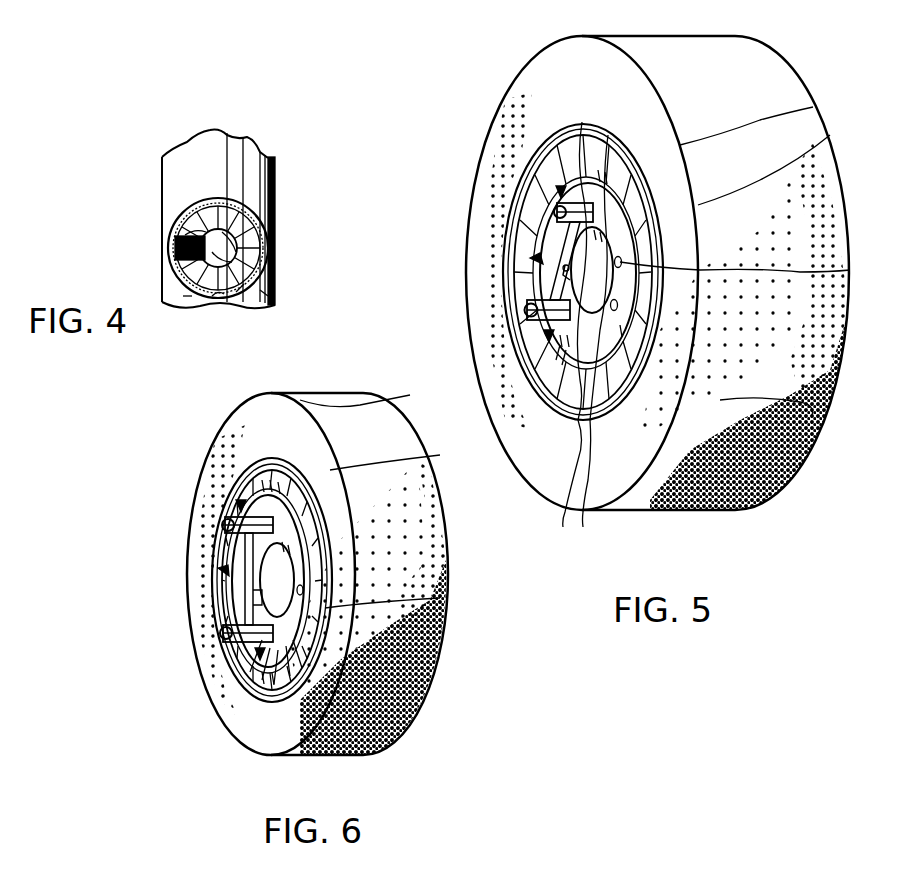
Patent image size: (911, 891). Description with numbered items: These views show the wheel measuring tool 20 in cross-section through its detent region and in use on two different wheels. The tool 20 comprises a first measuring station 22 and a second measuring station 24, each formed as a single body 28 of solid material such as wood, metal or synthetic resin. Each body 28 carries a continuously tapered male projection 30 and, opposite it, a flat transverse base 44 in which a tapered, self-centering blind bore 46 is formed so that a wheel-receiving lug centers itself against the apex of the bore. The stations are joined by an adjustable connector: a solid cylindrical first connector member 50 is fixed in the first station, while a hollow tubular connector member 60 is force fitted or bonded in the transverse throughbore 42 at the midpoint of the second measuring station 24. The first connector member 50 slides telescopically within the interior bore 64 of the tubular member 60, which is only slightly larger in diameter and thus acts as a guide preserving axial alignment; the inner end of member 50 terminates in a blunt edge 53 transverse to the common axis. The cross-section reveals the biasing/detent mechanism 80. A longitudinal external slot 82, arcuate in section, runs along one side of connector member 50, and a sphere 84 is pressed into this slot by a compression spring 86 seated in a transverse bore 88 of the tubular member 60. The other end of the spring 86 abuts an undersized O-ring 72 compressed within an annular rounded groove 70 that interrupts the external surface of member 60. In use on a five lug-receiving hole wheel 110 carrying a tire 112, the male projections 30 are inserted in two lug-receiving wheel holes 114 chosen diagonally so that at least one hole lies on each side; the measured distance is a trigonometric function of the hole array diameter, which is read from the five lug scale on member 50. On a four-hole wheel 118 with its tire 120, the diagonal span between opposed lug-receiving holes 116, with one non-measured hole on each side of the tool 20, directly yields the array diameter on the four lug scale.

In FIG. 5, the tool 20 is at (548, 258).
In FIG. 6, the tool 20 is at (238, 575).
In FIG. 5, the first measuring station 22 is at (500, 110).
In FIG. 6, the first measuring station 22 is at (212, 440).
In FIG. 4, the second measuring station 24 is at (222, 112).
In FIG. 5, the second measuring station 24 is at (560, 360).
In FIG. 6, the second measuring station 24 is at (265, 700).
In FIG. 4, the body 28 is at (186, 140).
In FIG. 5, the body 28 is at (582, 122).
In FIG. 6, the body 28 is at (258, 398).
In FIG. 5, the male projection 30 is at (608, 135).
In FIG. 6, the male projection 30 is at (300, 475).
In FIG. 4, the throughbore 42 is at (188, 303).
In FIG. 5, the base 44 is at (558, 208).
In FIG. 6, the base 44 is at (230, 518).
In FIG. 5, the blind bore 46 is at (548, 195).
In FIG. 6, the blind bore 46 is at (228, 526).
In FIG. 4, the first connector member 50 is at (268, 264).
In FIG. 5, the first connector member 50 is at (535, 245).
In FIG. 6, the first connector member 50 is at (226, 560).
In FIG. 4, the blunt edge 53 is at (264, 300).
In FIG. 4, the hollow tubular connector member 60 is at (242, 302).
In FIG. 5, the hollow tubular connector member 60 is at (553, 275).
In FIG. 6, the hollow tubular connector member 60 is at (240, 598).
In FIG. 4, the interior bore 64 is at (266, 215).
In FIG. 4, the annular groove 70 is at (272, 252).
In FIG. 4, the O-ring 72 is at (238, 186).
In FIG. 4, the biasing/detent mechanism 80 is at (183, 198).
In FIG. 4, the external slot 82 is at (222, 305).
In FIG. 4, the sphere 84 is at (256, 240).
In FIG. 4, the compression spring 86 is at (176, 250).
In FIG. 4, the transverse bore 88 is at (185, 240).
In FIG. 5, the five lug-receiving hole wheel 110 is at (814, 107).
In FIG. 5, the tire 112 is at (804, 418).
In FIG. 5, the lug-receiving wheel hole 114 is at (822, 135).
In FIG. 6, the lug-receiving hole 116 is at (232, 590).
In FIG. 6, the four-hole wheel 118 is at (298, 397).
In FIG. 6, the tire 120 is at (398, 502).